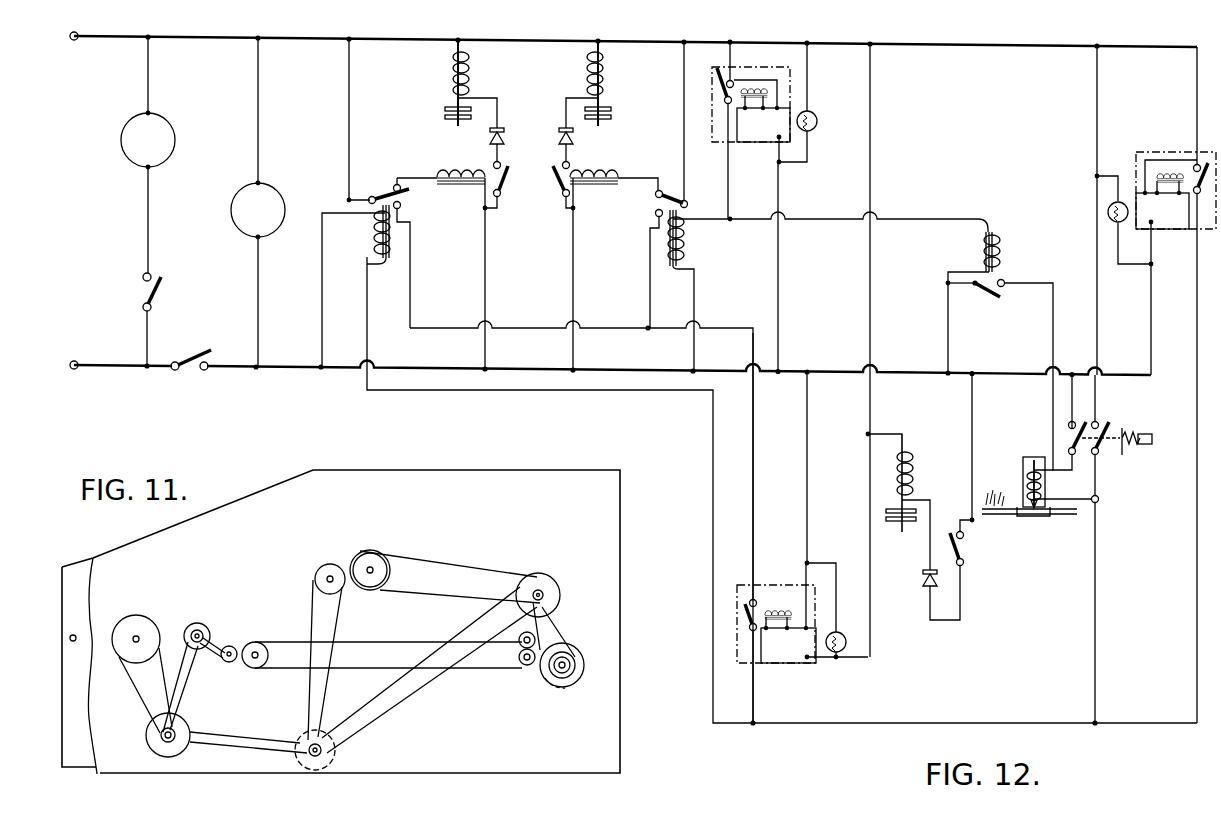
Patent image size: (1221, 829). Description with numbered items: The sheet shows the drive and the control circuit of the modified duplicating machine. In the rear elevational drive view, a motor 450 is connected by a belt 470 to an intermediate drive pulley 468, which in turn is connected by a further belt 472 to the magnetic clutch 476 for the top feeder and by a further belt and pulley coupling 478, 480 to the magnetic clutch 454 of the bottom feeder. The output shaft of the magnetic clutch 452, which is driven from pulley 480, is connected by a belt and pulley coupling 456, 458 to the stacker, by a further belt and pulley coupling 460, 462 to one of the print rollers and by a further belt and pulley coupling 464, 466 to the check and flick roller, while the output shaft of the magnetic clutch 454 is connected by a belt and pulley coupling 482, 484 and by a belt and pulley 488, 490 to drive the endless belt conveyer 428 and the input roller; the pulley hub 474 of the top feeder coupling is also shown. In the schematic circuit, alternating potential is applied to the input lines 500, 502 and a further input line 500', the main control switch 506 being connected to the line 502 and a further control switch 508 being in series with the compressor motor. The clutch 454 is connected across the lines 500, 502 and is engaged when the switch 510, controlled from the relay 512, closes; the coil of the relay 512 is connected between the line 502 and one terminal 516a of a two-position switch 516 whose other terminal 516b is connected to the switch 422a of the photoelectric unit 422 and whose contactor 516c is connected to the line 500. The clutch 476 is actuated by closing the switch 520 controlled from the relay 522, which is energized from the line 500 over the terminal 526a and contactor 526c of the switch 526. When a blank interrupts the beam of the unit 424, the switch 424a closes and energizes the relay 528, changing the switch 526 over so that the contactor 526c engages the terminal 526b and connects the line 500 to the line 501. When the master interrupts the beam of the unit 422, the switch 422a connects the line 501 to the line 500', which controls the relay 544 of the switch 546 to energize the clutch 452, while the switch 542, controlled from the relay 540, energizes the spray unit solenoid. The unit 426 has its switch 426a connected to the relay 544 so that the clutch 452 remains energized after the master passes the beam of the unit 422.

In FIG. 12, the input line 500 is at (633, 32).
In FIG. 12, the line 501 is at (600, 329).
In FIG. 12, the input line 502 is at (78, 366).
In FIG. 12, the input line 500' is at (782, 505).
In FIG. 12, the main control switch 506 is at (194, 354).
In FIG. 12, the control switch 508 is at (160, 298).
In FIG. 12, the switch 510 is at (500, 190).
In FIG. 12, the relay 512 is at (462, 180).
In FIG. 12, the two-position switch 516 is at (380, 229).
In FIG. 12, the terminal 516a is at (396, 184).
In FIG. 12, the terminal 516b is at (400, 205).
In FIG. 12, the contactor 516c is at (371, 197).
In FIG. 12, the switch 520 is at (556, 195).
In FIG. 12, the relay 522 is at (602, 180).
In FIG. 12, the two-position switch 526 is at (687, 202).
In FIG. 12, the terminal 526a is at (653, 229).
In FIG. 12, the terminal 526b is at (658, 214).
In FIG. 12, the contactor 526c is at (660, 194).
In FIG. 12, the relay 528 is at (684, 252).
In FIG. 12, the relay 540 is at (990, 253).
In FIG. 12, the switch 542 is at (994, 298).
In FIG. 12, the relay 544 is at (1008, 553).
In FIG. 12, the switch 546 is at (966, 566).
In FIG. 12, the electrosensing system 422 is at (766, 584).
In FIG. 12, the switch 422a is at (743, 607).
In FIG. 12, the electrosensing system 424 is at (767, 66).
In FIG. 12, the switch 424a is at (723, 78).
In FIG. 12, the electrosensing system 426 is at (1151, 152).
In FIG. 12, the switch 426a is at (1184, 385).
In FIG. 12, the motor 450 is at (232, 216).
In FIG. 11, the motor 450 is at (339, 756).
In FIG. 12, the magnetic clutch 452 is at (907, 495).
In FIG. 11, the magnetic clutch 452 is at (148, 748).
In FIG. 12, the magnetic clutch 454 is at (447, 92).
In FIG. 11, the magnetic clutch 454 is at (584, 662).
In FIG. 11, the belt 456 is at (138, 707).
In FIG. 11, the pulley 458 is at (142, 618).
In FIG. 11, the belt 460 is at (186, 670).
In FIG. 11, the pulley 462 is at (192, 624).
In FIG. 11, the belt 464 is at (244, 666).
In FIG. 11, the pulley 466 is at (219, 645).
In FIG. 11, the intermediate drive pulley 468 is at (546, 587).
In FIG. 11, the belt 470 is at (414, 700).
In FIG. 11, the belt 472 is at (446, 558).
In FIG. 11, the pulley hub 474 is at (373, 573).
In FIG. 12, the magnetic clutch 476 is at (604, 106).
In FIG. 11, the magnetic clutch 476 is at (379, 551).
In FIG. 11, the belt 478 is at (567, 624).
In FIG. 11, the pulley 480 is at (585, 672).
In FIG. 11, the belt 482 is at (555, 689).
In FIG. 11, the pulley 484 is at (562, 677).
In FIG. 11, the belt 488 is at (527, 638).
In FIG. 11, the pulley 490 is at (519, 664).
In FIG. 11, the endless belt conveyer 428 is at (411, 644).